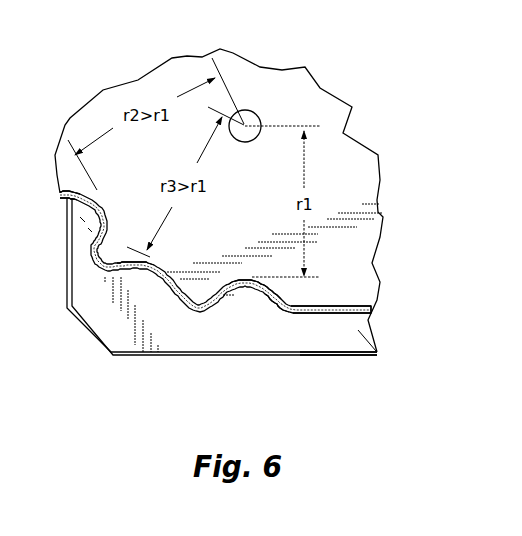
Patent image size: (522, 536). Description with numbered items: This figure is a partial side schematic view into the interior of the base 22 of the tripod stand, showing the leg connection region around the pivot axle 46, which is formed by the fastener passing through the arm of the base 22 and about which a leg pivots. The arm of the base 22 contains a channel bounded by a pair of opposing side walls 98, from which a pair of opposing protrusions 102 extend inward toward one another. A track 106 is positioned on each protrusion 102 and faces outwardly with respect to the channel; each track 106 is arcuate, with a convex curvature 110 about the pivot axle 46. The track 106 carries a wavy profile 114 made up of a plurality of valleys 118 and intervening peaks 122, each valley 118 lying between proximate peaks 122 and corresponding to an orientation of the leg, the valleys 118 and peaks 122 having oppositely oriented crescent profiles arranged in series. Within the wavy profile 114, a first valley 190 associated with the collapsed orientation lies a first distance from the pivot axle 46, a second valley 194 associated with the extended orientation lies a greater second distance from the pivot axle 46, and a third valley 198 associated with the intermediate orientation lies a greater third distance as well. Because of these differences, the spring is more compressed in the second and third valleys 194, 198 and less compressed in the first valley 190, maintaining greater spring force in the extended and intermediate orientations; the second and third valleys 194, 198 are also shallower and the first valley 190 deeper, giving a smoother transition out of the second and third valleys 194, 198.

The base 22 is at (313, 95).
The pivot axle 46 is at (253, 111).
The opposing side walls 98 is at (378, 354).
The opposing protrusions 102 is at (342, 293).
The track 106 is at (277, 302).
The convex curvature 110 is at (93, 258).
The wavy profile 114 is at (276, 292).
The valley 118 is at (112, 295).
The peak 122 is at (155, 272).
The first valley 190 is at (247, 283).
The second valley 194 is at (66, 210).
The third valley 198 is at (147, 277).